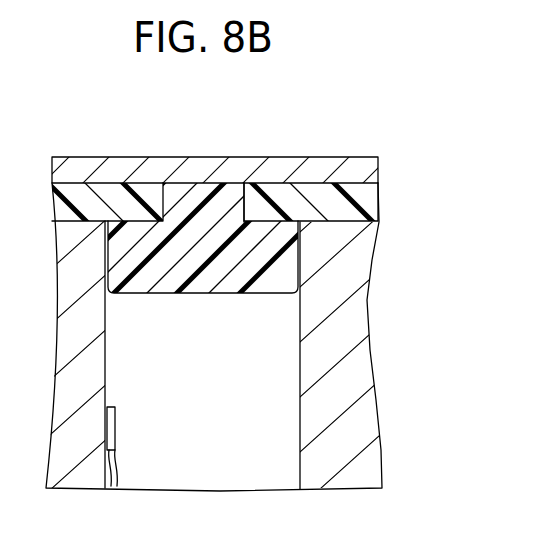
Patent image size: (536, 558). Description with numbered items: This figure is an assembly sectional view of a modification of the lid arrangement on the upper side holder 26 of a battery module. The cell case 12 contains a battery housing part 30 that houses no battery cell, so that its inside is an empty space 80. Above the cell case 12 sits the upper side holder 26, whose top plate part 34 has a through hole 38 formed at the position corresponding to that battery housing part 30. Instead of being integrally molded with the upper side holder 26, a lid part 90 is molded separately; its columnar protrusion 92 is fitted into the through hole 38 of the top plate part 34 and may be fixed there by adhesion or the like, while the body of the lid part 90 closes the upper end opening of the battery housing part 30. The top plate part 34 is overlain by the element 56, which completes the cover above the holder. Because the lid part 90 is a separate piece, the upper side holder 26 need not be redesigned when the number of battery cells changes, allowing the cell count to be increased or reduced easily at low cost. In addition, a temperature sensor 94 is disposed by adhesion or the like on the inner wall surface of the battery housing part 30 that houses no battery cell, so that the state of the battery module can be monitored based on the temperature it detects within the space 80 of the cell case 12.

The cell case 12 is at (370, 342).
The upper side holder 26 is at (385, 200).
The battery housing part 30 is at (300, 440).
The top plate part 34 is at (323, 200).
The through hole 38 is at (244, 204).
The cover plate 56 is at (116, 172).
The space 80 is at (179, 442).
The lid part 90 is at (203, 294).
The columnar protrusion 92 is at (197, 197).
The temperature sensor 94 is at (115, 427).